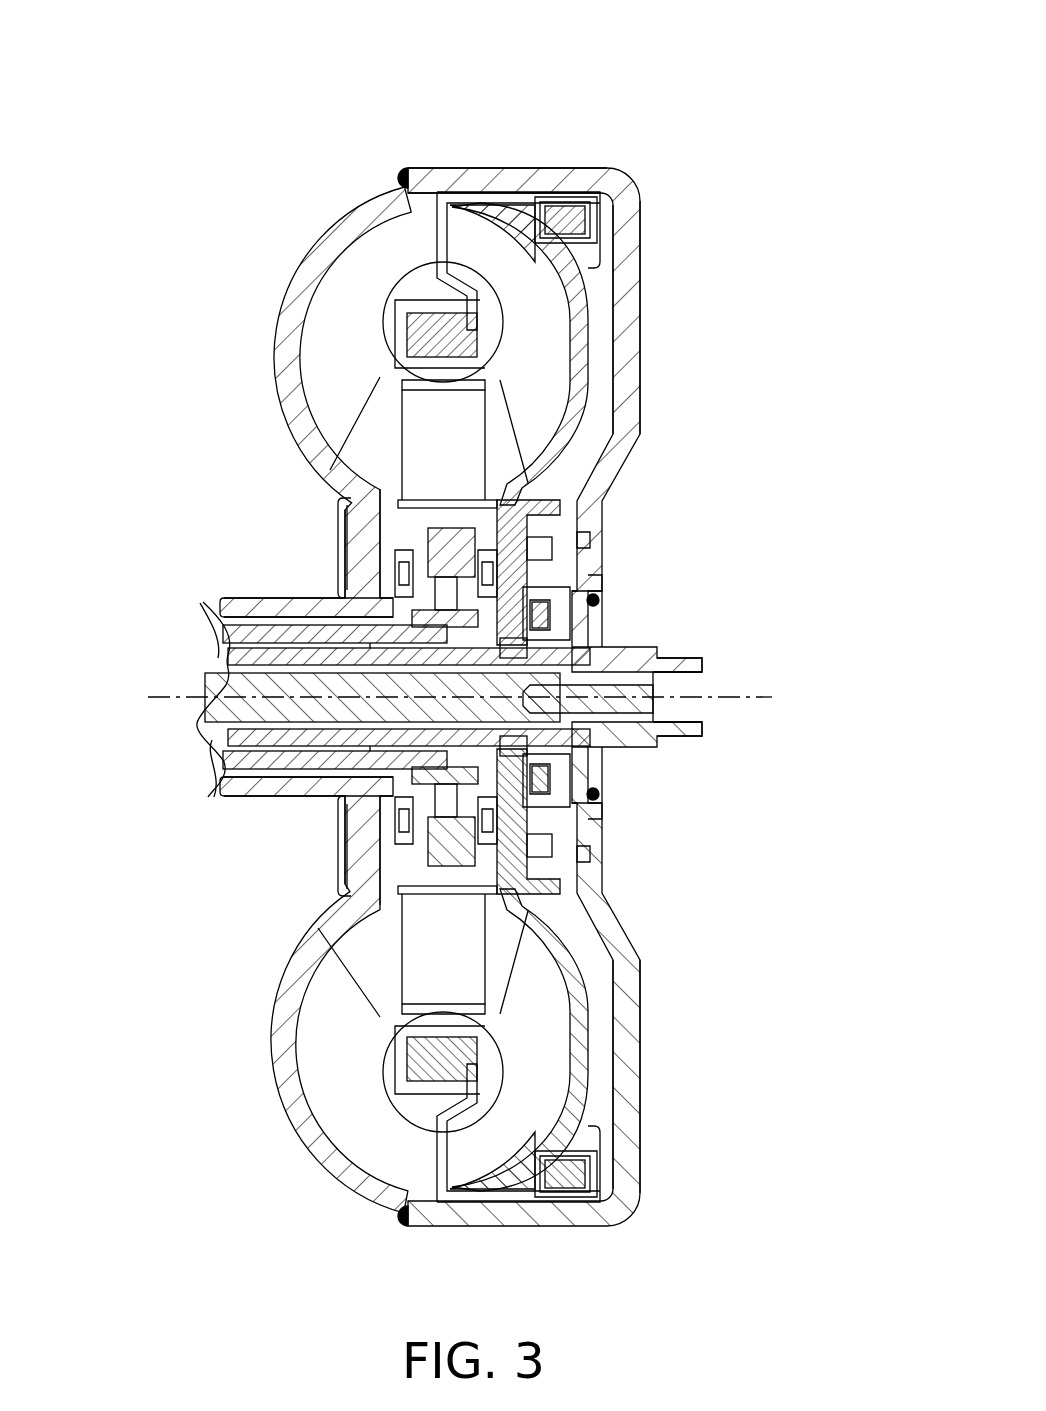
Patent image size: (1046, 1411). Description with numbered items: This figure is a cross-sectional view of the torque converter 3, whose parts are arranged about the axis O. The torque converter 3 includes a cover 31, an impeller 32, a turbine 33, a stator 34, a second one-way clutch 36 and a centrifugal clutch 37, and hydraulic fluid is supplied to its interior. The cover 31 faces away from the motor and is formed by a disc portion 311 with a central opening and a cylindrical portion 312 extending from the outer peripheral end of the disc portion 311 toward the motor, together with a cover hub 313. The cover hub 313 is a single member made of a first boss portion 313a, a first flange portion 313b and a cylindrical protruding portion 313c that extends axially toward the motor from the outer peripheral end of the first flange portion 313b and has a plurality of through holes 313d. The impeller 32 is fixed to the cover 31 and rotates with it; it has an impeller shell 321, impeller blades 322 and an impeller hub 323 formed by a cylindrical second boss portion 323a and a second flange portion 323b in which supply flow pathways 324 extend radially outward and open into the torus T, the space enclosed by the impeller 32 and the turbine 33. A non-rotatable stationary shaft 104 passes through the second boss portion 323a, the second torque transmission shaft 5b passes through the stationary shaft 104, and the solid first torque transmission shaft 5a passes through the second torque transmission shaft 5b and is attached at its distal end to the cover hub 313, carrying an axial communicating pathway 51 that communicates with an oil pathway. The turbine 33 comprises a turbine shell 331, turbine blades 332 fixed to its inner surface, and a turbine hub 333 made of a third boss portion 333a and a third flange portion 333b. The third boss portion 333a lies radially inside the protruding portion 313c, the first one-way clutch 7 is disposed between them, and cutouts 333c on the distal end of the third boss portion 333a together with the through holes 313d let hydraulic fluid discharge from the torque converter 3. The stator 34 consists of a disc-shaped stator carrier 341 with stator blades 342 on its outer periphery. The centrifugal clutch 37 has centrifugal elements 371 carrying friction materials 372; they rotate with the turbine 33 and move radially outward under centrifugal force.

The torque converter 3 is at (468, 613).
The cover 31 is at (605, 632).
The disc portion 311 is at (641, 305).
The cylindrical portion 312 is at (492, 185).
The cover hub 313 is at (692, 694).
The first boss portion 313a is at (658, 650).
The first flange portion 313b is at (606, 630).
The protruding portion 313c is at (580, 545).
The through holes 313d is at (592, 582).
The impeller 32 is at (250, 672).
The impeller shell 321 is at (303, 271).
The impeller blades 322 is at (320, 355).
The impeller hub 323 is at (241, 684).
The second boss portion 323a is at (241, 677).
The second flange portion 323b is at (352, 520).
The supply flow pathways 324 is at (385, 505).
The turbine 33 is at (579, 697).
The turbine shell 331 is at (588, 350).
The turbine blades 332 is at (546, 394).
The turbine hub 333 is at (566, 696).
The third boss portion 333a is at (553, 641).
The third flange portion 333b is at (528, 798).
The cutouts 333c is at (579, 626).
The stator 34 is at (322, 697).
The stator carrier 341 is at (402, 490).
The stator blades 342 is at (417, 415).
The second one-way clutch 36 is at (437, 585).
The centrifugal clutch 37 is at (582, 635).
The centrifugal elements 371 is at (600, 206).
The friction materials 372 is at (562, 202).
The first one-way clutch 7 is at (545, 623).
The stationary shaft 104 is at (225, 633).
The first torque transmission shaft 5a is at (224, 677).
The second torque transmission shaft 5b is at (233, 656).
The communicating pathway 51 is at (657, 692).
The torus T is at (418, 236).
The rotation axis O is at (456, 701).